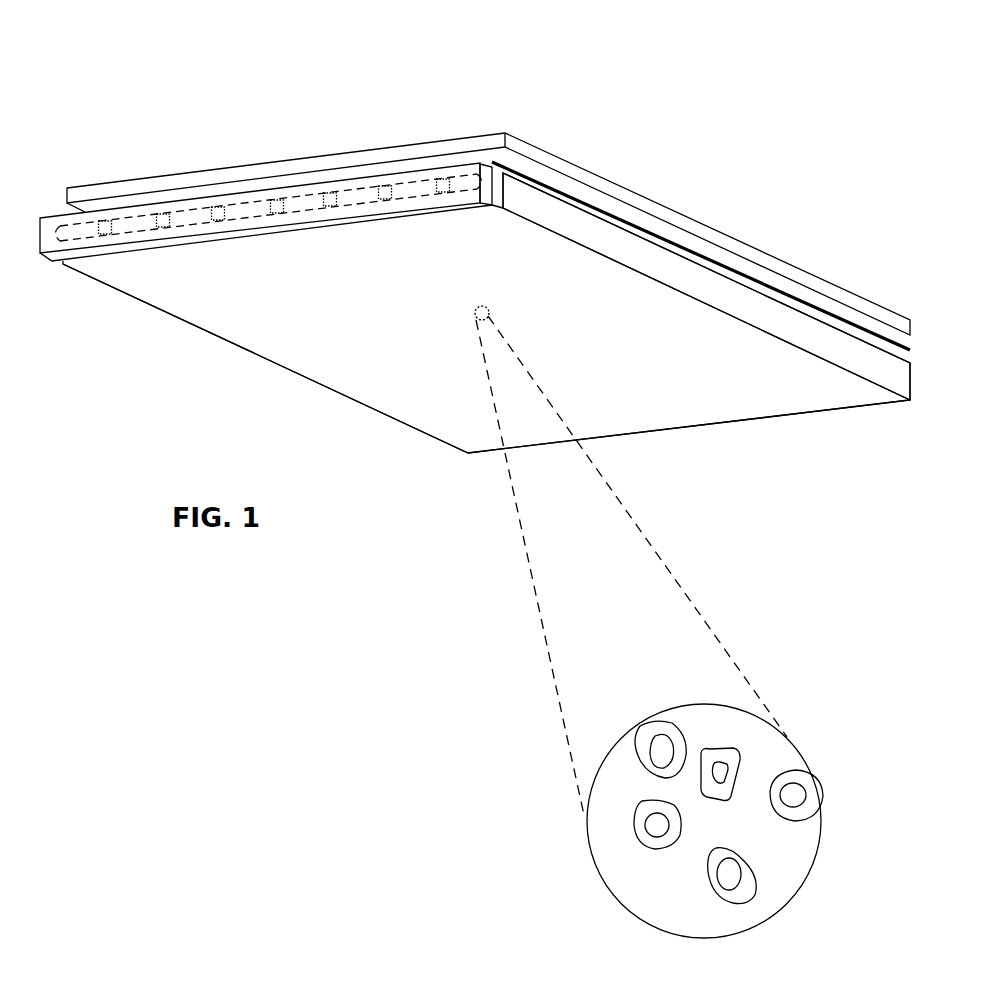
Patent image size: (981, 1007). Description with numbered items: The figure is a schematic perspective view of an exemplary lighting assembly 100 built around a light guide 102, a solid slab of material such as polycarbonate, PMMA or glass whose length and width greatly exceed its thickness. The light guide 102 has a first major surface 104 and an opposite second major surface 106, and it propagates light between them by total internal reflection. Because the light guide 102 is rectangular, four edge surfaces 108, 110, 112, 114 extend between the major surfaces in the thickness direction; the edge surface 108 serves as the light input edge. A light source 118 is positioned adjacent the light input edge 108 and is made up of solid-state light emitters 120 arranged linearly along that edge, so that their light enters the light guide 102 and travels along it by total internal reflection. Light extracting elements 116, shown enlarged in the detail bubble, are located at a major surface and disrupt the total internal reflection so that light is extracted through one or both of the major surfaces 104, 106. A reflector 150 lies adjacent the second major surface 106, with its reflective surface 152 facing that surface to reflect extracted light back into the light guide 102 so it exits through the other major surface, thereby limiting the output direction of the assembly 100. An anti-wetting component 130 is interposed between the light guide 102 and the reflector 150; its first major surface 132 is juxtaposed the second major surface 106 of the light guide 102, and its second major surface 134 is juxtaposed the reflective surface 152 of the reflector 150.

The lighting assembly 100 is at (140, 80).
The light guide 102 is at (213, 322).
The first major surface 104 is at (398, 400).
The second major surface 106 is at (580, 204).
The edge surface (light input edge) 108 is at (498, 204).
The edge surface 110 is at (623, 250).
The edge surface 112 is at (665, 430).
The edge surface 114 is at (264, 358).
The light extracting elements 116 is at (655, 838).
The light source 118 is at (56, 225).
The solid-state light emitters 120 is at (105, 224).
The anti-wetting component 130 is at (877, 333).
The first major surface of anti-wetting component 132 is at (847, 327).
The second major surface of anti-wetting component 134 is at (828, 315).
The reflector 150 is at (715, 237).
The reflective surface 152 is at (768, 277).